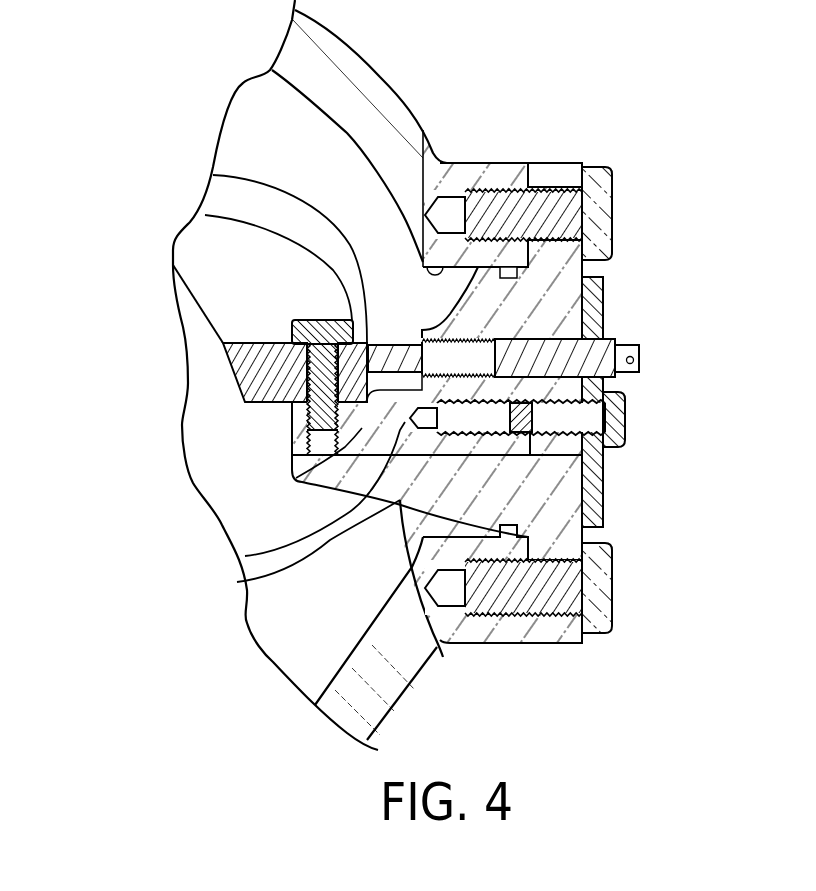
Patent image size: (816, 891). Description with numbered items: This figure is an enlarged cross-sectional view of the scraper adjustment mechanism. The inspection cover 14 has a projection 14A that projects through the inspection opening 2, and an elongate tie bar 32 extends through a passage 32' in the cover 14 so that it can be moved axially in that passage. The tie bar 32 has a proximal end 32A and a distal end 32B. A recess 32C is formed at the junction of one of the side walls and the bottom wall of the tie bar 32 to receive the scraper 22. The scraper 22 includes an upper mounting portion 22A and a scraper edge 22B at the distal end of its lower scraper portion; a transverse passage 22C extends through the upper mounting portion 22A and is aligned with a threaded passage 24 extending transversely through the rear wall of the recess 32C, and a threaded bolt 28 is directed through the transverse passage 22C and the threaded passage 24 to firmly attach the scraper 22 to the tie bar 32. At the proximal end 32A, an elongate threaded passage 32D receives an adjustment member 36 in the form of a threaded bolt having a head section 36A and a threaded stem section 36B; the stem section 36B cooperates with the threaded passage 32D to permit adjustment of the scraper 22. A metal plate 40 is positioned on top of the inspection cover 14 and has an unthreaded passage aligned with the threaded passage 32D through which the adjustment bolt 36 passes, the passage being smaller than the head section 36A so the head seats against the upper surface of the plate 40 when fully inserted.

The inspection opening 2 is at (423, 130).
The inspection cover 14 is at (584, 654).
The projection 14A is at (443, 657).
The scraper 22 is at (258, 335).
The upper mounting portion 22A is at (213, 175).
The scraper edge 22B is at (243, 399).
The transverse passages 22C is at (205, 215).
The threaded passages 24 is at (292, 481).
The threaded bolt 28 is at (316, 311).
The tie bar 32 is at (370, 386).
The passage 32' is at (291, 495).
The proximal end 32A is at (522, 447).
The distal end 32B is at (290, 446).
The recess 32C is at (362, 393).
The threaded passage 32D is at (237, 582).
The adjustment member 36 is at (642, 440).
The head section 36A is at (622, 397).
The threaded stem section 36B is at (512, 417).
The metal plate 40 is at (618, 532).